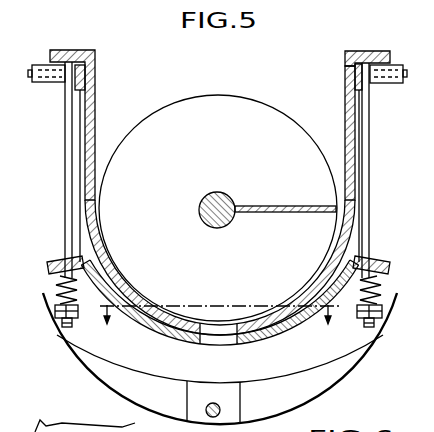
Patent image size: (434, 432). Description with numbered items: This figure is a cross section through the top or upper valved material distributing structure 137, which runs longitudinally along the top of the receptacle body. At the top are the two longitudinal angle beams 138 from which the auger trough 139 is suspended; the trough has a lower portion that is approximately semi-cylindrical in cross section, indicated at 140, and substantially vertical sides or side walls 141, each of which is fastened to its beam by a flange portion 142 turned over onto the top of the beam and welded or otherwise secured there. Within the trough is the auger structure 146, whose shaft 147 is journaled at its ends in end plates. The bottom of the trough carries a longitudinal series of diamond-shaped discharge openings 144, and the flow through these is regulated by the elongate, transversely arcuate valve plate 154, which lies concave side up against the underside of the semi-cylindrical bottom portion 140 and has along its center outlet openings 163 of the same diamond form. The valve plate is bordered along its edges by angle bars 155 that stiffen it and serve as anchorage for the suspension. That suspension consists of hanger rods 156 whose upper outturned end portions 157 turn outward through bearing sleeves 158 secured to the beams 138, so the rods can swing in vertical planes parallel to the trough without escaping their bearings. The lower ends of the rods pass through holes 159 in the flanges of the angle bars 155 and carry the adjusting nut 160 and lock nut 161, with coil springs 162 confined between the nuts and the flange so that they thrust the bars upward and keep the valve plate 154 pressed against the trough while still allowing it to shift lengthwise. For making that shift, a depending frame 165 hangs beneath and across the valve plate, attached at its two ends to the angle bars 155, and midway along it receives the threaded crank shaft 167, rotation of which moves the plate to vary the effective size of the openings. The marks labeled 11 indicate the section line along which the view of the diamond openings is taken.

The section line 11- 11 is at (220, 325).
The valved material distributing structure 137 is at (60, 196).
The longitudinal angle beams 138 is at (76, 86).
The auger trough 139 is at (337, 134).
The semi-cylindrical bottom portion 140 is at (168, 332).
The side walls 141 is at (353, 170).
The flange portion 142 is at (366, 50).
The discharge openings 144 is at (230, 326).
The auger structure 146 is at (169, 117).
The shaft 147 is at (217, 203).
The valve plate 154 is at (281, 333).
The angle bars 155 is at (382, 266).
The hanger rods 156 is at (64, 158).
The outturned end portions 157 is at (407, 66).
The bearing sleeves 158 is at (42, 69).
The holes 159 is at (60, 268).
The adjusting nut 160 is at (55, 311).
The lock nut 161 is at (61, 322).
The coil springs 162 is at (383, 297).
The outlet openings 163 is at (230, 347).
The depending frame 165 is at (122, 396).
The threaded crank shaft 167 is at (213, 403).